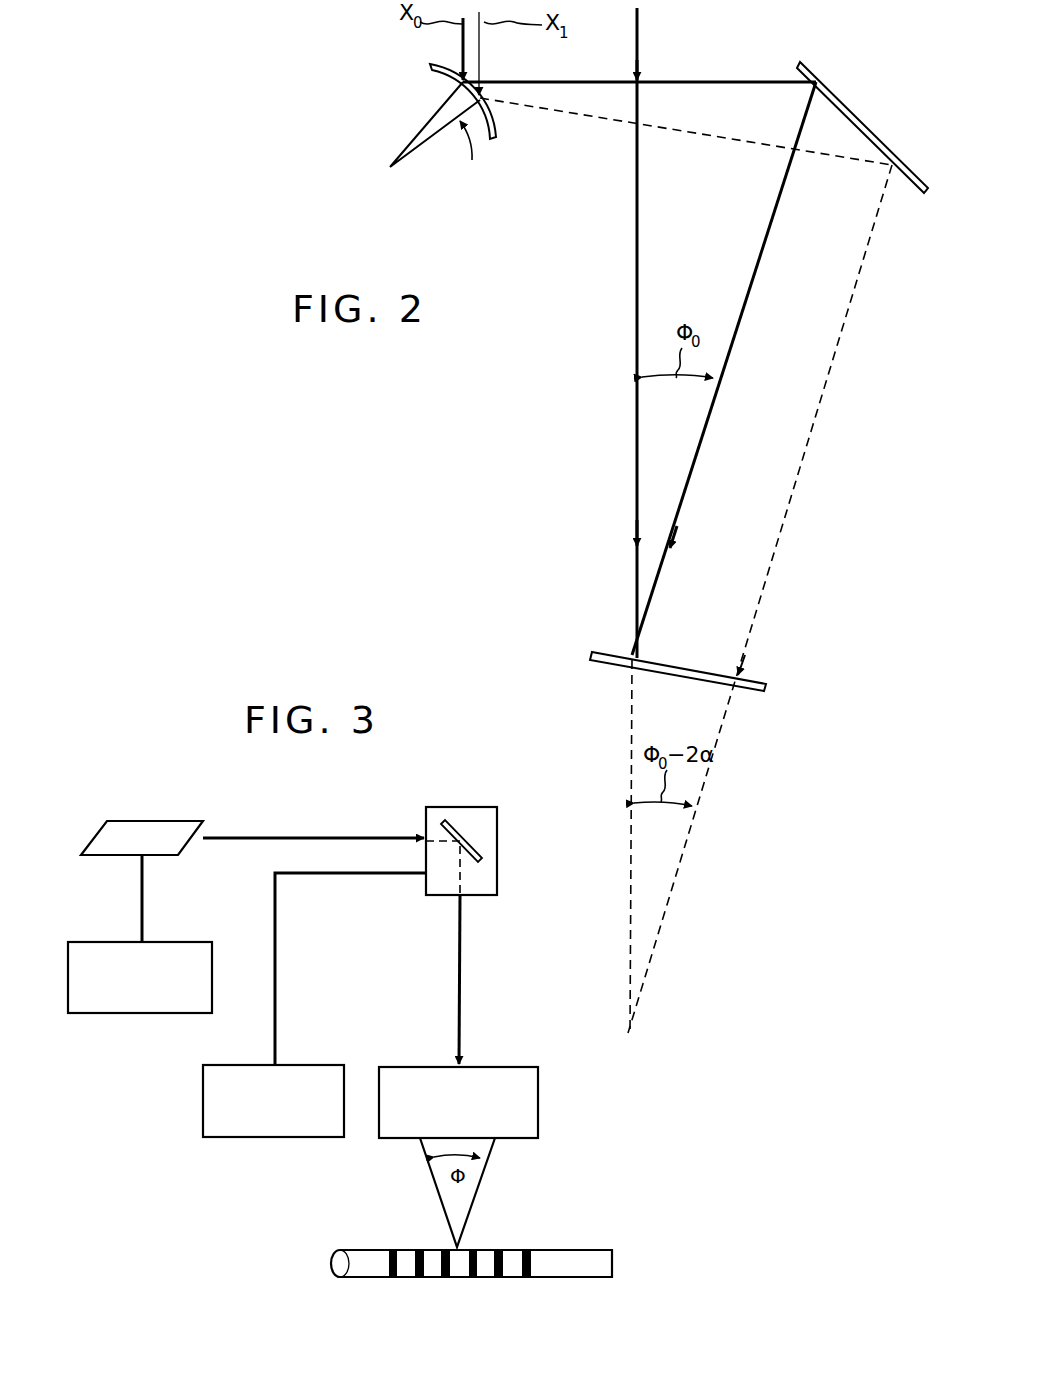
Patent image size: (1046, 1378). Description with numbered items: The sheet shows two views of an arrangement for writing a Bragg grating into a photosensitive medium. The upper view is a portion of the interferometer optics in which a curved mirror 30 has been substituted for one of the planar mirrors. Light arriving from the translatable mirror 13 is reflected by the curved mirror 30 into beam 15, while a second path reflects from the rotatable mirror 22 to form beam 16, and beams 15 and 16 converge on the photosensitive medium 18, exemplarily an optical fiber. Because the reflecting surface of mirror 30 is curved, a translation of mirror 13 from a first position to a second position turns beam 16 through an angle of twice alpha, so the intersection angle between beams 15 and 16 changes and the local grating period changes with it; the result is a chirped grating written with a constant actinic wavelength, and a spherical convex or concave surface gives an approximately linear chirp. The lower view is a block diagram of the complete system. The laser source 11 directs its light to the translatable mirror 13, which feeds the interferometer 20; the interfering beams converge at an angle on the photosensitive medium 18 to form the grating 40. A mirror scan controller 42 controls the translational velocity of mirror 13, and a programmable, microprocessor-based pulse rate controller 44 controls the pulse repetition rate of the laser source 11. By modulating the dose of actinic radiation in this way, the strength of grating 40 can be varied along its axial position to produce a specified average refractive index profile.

In FIG. 3, the laser source 11 is at (152, 820).
In FIG. 3, the translatable mirror 13 is at (452, 822).
In FIG. 2, the beam 15 is at (637, 196).
In FIG. 2, the beam 16 is at (765, 246).
In FIG. 2, the photosensitive medium 18 is at (592, 659).
In FIG. 3, the photosensitive medium 18 is at (612, 1265).
In FIG. 3, the interferometer 20 is at (538, 1128).
In FIG. 2, the rotatable mirror 22 is at (863, 122).
In FIG. 2, the curved mirror 30 is at (496, 138).
In FIG. 3, the grating 40 is at (536, 1282).
In FIG. 3, the controller 42 is at (203, 1120).
In FIG. 3, the programmable, microprocessor-based controller 44 is at (112, 1013).